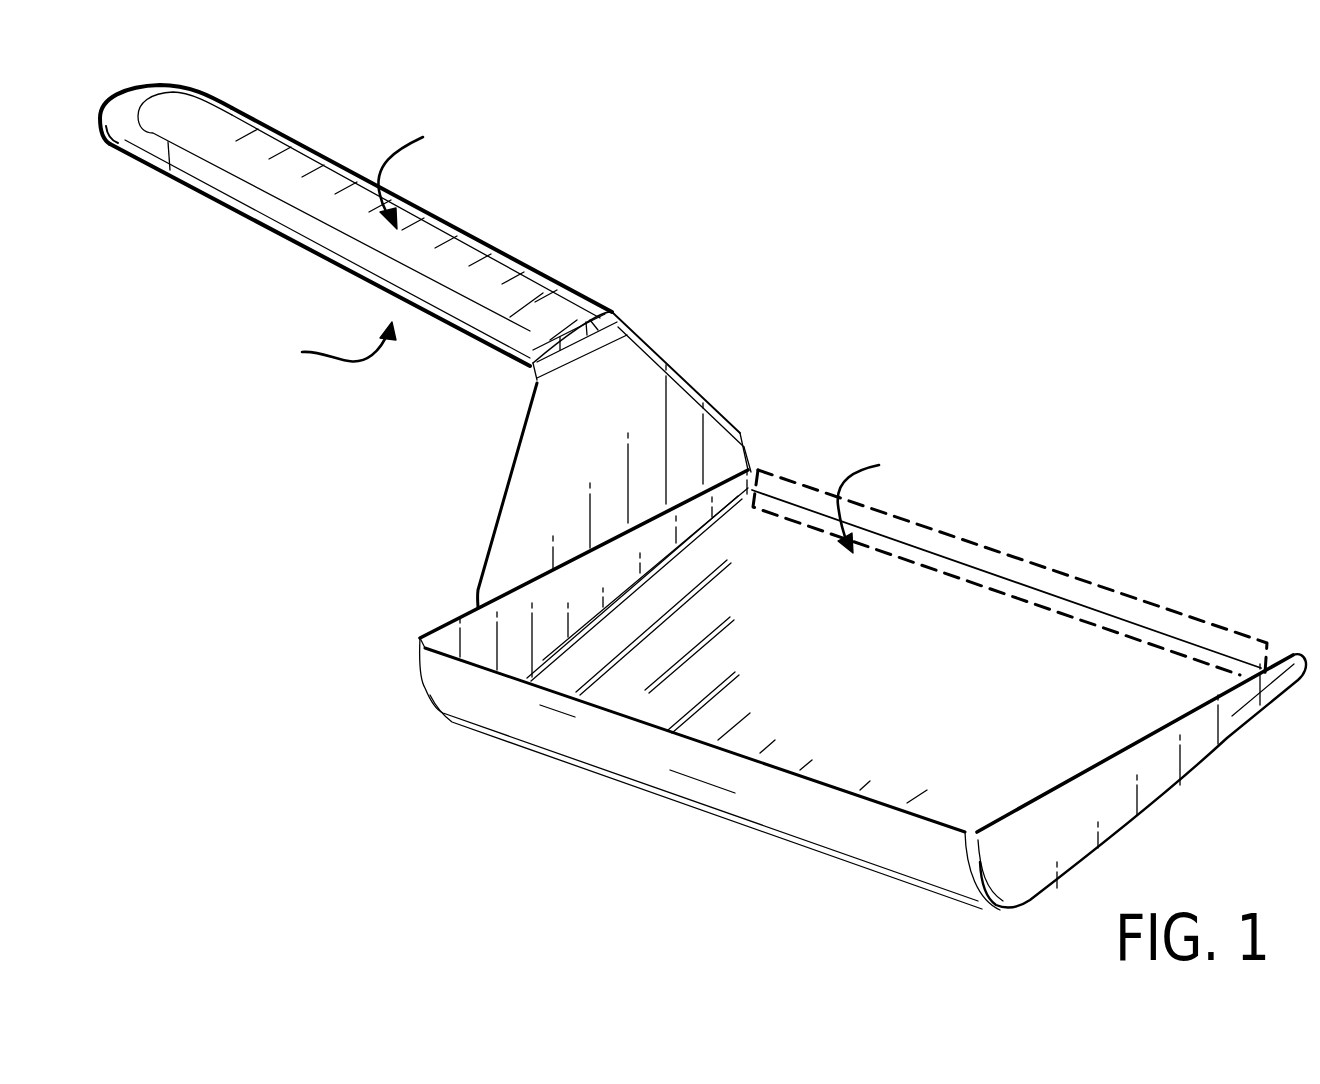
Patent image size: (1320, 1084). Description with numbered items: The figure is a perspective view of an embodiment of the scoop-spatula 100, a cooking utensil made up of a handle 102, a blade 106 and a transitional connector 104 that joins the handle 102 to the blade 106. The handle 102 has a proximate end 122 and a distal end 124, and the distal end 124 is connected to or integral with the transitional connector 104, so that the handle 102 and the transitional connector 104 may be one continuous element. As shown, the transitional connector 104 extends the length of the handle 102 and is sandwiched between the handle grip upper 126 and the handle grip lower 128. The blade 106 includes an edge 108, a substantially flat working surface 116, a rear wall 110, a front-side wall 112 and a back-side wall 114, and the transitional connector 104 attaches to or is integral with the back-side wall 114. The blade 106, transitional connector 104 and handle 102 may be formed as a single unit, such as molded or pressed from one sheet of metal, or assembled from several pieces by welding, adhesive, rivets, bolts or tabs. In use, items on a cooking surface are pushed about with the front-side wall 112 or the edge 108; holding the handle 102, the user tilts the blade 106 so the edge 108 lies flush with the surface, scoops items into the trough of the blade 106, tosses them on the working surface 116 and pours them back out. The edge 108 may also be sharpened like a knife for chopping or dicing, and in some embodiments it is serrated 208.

The scoop-spatula 100 is at (935, 209).
The handle 102 is at (256, 228).
The transitional connector 104 is at (522, 437).
The blade 106 is at (892, 644).
The edge 108 is at (1042, 588).
The rear wall 110 is at (638, 772).
The front-side wall 112 is at (1108, 818).
The back-side wall 114 is at (447, 630).
The substantially flat working surface 116 is at (881, 496).
The proximate end 122 is at (128, 88).
The distal end 124 is at (613, 312).
The handle grip upper 126 is at (423, 171).
The handle grip lower 128 is at (324, 347).
The serrated 208 is at (970, 540).